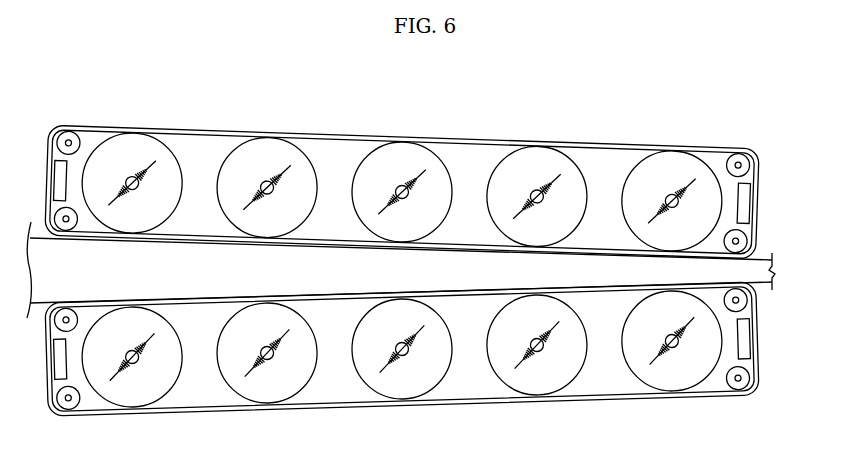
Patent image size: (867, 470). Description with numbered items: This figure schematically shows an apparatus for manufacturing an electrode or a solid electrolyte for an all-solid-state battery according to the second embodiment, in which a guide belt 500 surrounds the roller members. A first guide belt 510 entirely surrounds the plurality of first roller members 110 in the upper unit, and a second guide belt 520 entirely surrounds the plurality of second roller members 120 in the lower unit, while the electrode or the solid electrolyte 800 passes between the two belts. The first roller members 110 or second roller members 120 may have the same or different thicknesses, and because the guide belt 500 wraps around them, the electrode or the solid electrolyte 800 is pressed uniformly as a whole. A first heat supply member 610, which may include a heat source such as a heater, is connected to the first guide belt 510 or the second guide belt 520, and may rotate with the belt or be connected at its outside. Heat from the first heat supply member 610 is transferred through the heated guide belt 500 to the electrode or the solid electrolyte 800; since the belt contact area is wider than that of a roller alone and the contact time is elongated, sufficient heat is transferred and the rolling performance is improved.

The guide belt 500 is at (765, 134).
The first guide belt 510 is at (760, 165).
The second guide belt 520 is at (760, 374).
The first roller members 110 is at (403, 167).
The second roller members 120 is at (403, 380).
The first heat supply member 610 is at (745, 205).
The electrode or solid electrolyte 800 is at (772, 272).